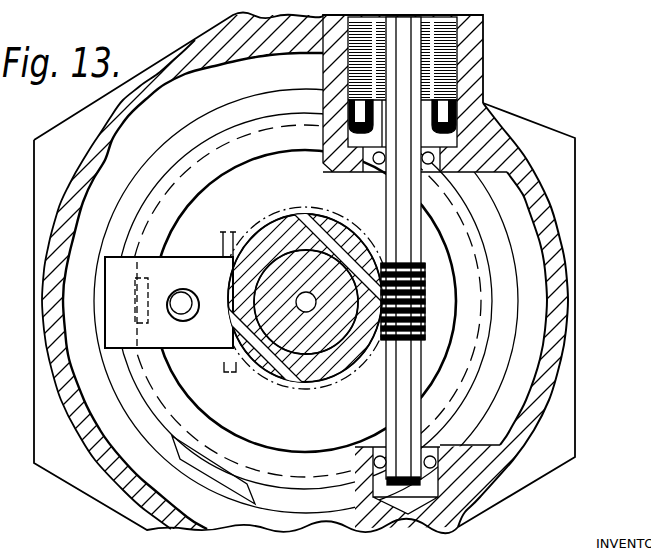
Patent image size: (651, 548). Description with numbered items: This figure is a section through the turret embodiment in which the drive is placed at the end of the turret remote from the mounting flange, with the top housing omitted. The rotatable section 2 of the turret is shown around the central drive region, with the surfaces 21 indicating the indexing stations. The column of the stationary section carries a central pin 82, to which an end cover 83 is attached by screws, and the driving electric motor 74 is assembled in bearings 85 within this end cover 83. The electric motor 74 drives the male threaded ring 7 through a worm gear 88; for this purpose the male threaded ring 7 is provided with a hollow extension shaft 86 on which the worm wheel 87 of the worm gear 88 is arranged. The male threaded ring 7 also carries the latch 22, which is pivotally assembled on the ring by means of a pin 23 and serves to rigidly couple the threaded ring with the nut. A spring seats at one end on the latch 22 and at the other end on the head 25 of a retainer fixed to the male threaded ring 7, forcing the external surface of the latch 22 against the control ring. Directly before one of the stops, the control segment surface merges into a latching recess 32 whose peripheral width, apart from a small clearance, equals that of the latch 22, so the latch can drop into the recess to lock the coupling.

The rotatable section 2 is at (58, 141).
The male threaded ring 7 is at (98, 443).
The surfaces 21 is at (576, 188).
The latch 22 is at (169, 305).
The pin 23 is at (231, 240).
The head 25 is at (192, 312).
The latching recess 32 is at (200, 470).
The electric motor 74 is at (448, 72).
The central pin 82 is at (316, 345).
The end cover 83 is at (544, 388).
The bearings 85 is at (440, 152).
The hollow extension shaft 86 is at (268, 357).
The worm wheel 87 is at (340, 226).
The worm gear 88 is at (392, 338).